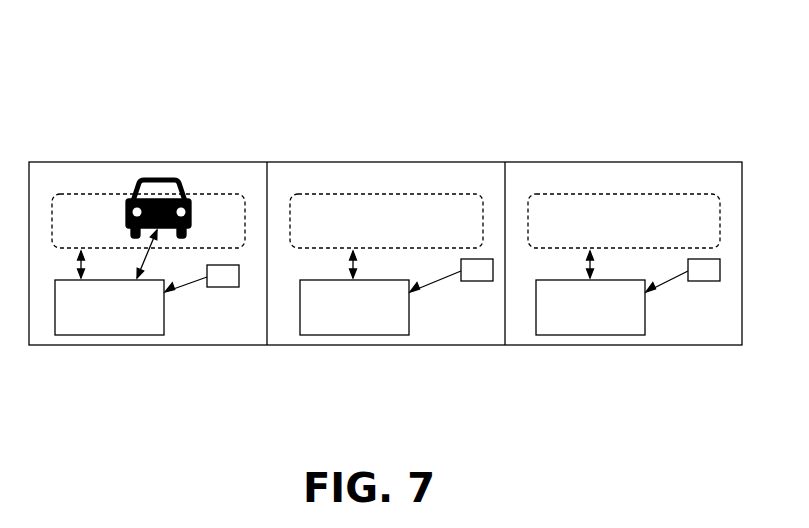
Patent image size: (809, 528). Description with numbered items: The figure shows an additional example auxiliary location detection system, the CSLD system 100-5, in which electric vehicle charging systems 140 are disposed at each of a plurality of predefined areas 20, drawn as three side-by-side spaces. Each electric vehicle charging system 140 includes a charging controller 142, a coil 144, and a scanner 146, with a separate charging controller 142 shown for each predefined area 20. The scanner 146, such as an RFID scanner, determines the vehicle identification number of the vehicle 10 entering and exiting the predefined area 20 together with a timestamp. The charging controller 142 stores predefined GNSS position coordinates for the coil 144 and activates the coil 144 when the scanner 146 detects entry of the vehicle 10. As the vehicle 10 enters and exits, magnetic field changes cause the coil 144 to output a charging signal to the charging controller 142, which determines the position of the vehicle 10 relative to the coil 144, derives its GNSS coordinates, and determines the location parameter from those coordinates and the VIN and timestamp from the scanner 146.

The CSLD system 100-5 is at (700, 75).
The predefined area 20 is at (45, 162).
The electric vehicle charging system 140 is at (225, 170).
The coil 144 is at (73, 194).
The charging controller 142 is at (78, 335).
The scanner 146 is at (230, 287).
The vehicle 10 is at (155, 180).